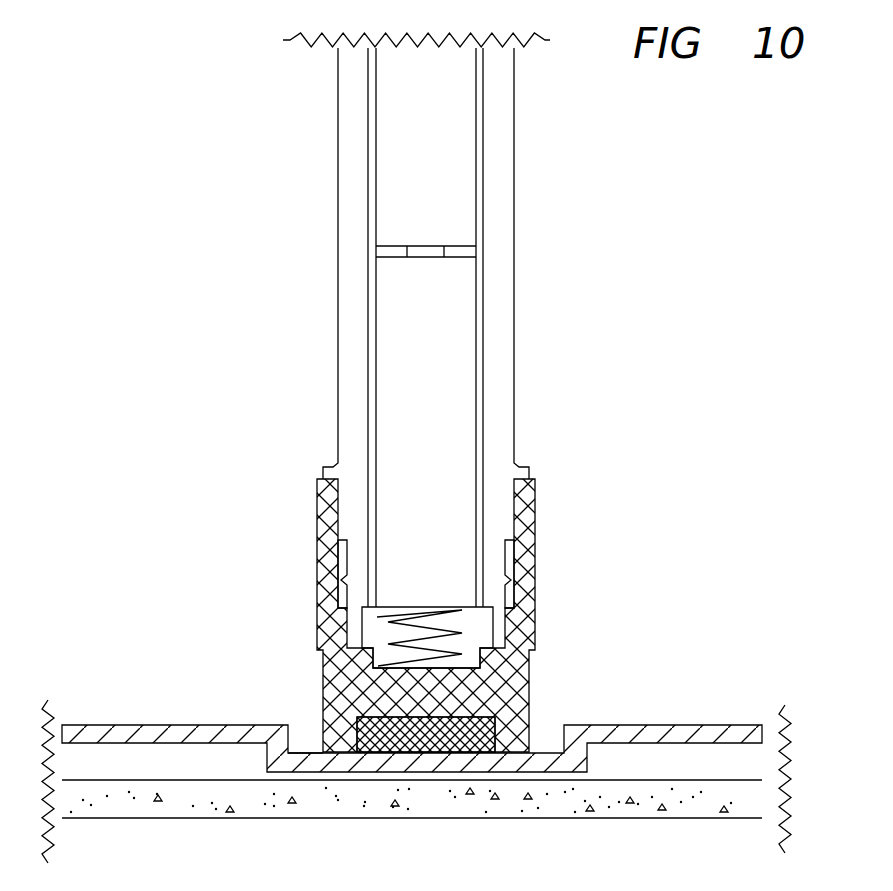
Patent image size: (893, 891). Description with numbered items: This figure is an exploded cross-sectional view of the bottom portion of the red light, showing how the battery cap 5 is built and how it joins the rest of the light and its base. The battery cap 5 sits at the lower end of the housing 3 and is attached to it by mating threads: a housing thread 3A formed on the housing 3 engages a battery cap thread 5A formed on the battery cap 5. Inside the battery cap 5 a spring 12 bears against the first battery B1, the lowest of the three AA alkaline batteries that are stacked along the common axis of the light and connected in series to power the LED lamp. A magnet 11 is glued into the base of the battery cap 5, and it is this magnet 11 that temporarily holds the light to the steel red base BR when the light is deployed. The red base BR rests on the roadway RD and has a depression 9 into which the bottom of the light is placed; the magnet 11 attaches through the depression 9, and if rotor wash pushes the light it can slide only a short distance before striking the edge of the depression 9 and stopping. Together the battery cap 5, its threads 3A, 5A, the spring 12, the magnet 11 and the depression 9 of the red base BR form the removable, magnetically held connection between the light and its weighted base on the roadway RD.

The housing 3 is at (348, 228).
The housing thread 3A is at (345, 567).
The battery cap 5 is at (527, 602).
The battery cap thread 5A is at (517, 568).
The battery 1 B1 is at (435, 405).
The depression 9 is at (305, 749).
The magnet 11 is at (477, 725).
The spring 12 is at (462, 633).
The red base BR is at (212, 729).
The roadway RD is at (553, 814).